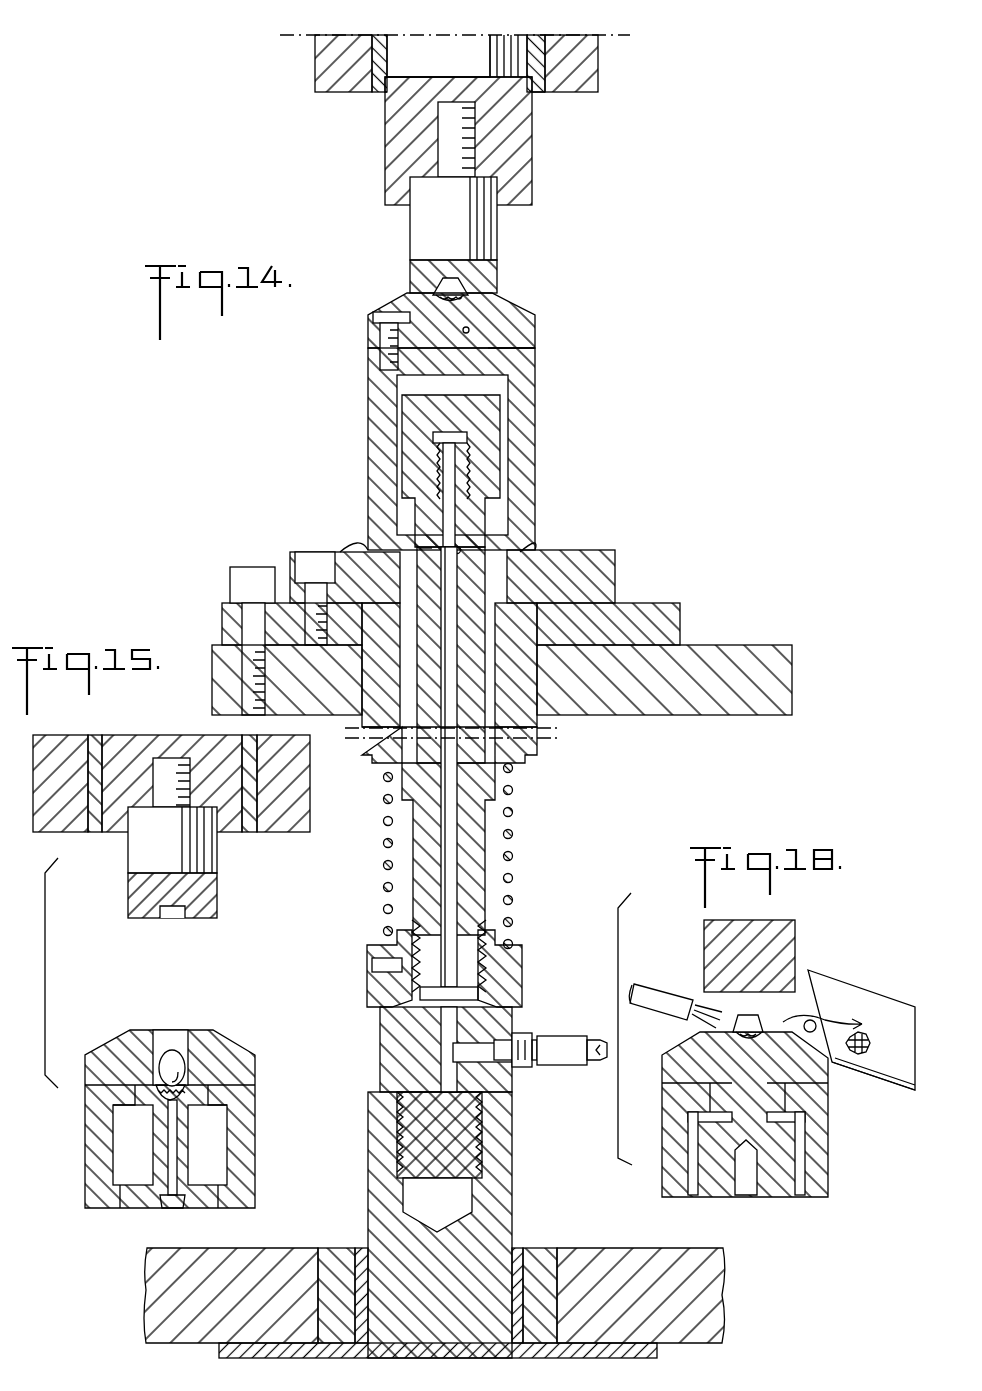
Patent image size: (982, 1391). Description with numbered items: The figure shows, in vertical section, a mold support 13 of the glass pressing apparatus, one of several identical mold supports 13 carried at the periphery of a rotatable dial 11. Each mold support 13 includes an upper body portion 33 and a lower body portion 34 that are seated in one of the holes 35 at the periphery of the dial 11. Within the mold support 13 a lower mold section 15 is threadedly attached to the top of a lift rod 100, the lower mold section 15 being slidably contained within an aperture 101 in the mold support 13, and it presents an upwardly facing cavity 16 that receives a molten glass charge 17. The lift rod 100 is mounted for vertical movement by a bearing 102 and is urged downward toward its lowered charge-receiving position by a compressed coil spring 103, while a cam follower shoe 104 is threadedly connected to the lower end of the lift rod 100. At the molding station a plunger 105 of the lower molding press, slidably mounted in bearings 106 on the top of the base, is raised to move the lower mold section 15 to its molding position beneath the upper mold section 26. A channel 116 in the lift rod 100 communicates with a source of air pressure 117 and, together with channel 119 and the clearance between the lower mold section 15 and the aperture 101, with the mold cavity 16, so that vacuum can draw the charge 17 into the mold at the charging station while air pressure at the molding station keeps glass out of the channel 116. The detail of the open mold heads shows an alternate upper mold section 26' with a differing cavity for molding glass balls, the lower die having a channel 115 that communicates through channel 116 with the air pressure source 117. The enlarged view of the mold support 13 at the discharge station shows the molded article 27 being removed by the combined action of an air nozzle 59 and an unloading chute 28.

In FIG. 14, the dial 11 is at (748, 650).
In FIG. 14, the mold support 13 is at (573, 527).
In FIG. 14, the lower mold section 15 is at (490, 405).
In FIG. 15, the lower mold section 15 is at (245, 1105).
In FIG. 18, the lower mold section 15 is at (780, 1160).
In FIG. 14, the cavity 16 is at (472, 296).
In FIG. 15, the glass charge 17 is at (172, 1052).
In FIG. 14, the upper mold section 26 is at (487, 218).
In FIG. 18, the upper mold section 26 is at (773, 954).
In FIG. 15, the upper mold section 26' is at (204, 862).
In FIG. 14, the molded article 27 is at (455, 284).
In FIG. 18, the molded article 27 is at (752, 1030).
In FIG. 18, the unloading chute 28 is at (850, 997).
In FIG. 14, the upper body portion 33 is at (520, 433).
In FIG. 14, the lower body portion 34 is at (540, 700).
In FIG. 14, the hole 35 is at (540, 600).
In FIG. 18, the air nozzle 59 is at (650, 992).
In FIG. 14, the lift rod 100 is at (480, 560).
In FIG. 14, the aperture 101 is at (472, 334).
In FIG. 14, the bearing 102 is at (535, 752).
In FIG. 14, the compressed coil spring 103 is at (513, 827).
In FIG. 14, the cam follower shoe 104 is at (515, 965).
In FIG. 14, the plunger 105 is at (497, 1168).
In FIG. 14, the bearings 106 is at (515, 1248).
In FIG. 15, the channel 115 is at (180, 1118).
In FIG. 14, the channel 116 is at (470, 551).
In FIG. 14, the source of air pressure 117 is at (556, 1040).
In FIG. 14, the channel 119 is at (430, 558).